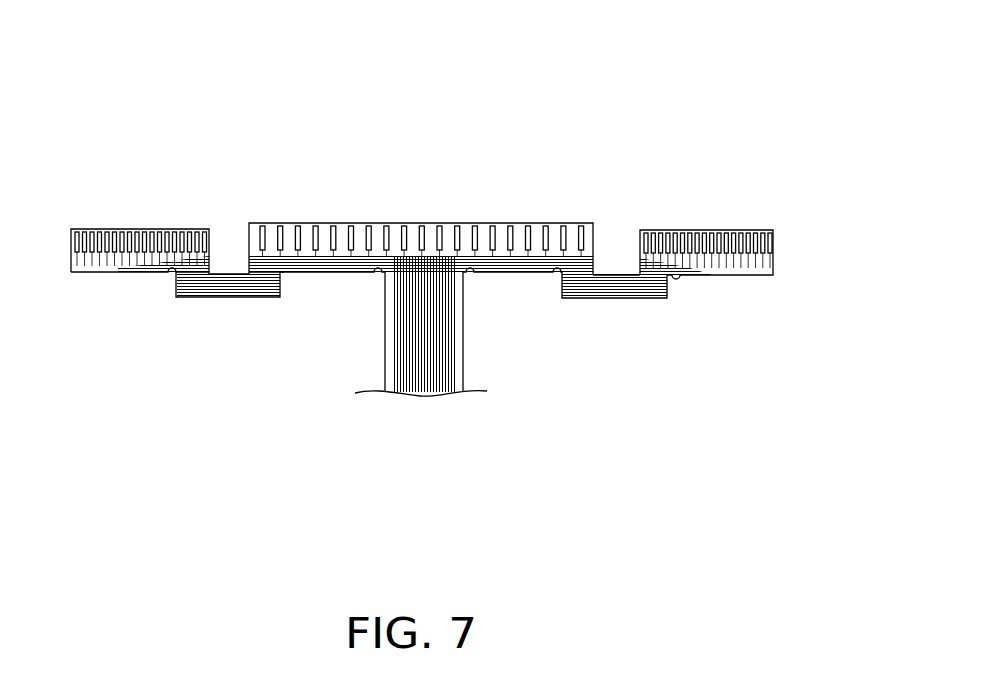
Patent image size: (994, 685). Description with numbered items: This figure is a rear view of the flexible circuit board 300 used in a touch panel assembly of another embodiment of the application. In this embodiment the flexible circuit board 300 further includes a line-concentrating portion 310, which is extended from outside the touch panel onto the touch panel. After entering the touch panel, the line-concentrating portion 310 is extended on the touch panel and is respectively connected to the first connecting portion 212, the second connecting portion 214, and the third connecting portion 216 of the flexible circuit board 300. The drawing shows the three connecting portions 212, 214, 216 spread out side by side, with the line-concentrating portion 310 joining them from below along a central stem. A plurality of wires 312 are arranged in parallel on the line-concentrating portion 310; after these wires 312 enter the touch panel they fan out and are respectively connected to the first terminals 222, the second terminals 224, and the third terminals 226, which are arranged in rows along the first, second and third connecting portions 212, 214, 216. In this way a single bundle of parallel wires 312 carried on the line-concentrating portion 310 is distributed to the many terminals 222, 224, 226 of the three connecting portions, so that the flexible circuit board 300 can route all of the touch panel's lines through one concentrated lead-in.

The flexible circuit board 300 is at (770, 101).
The first connecting portion 212 is at (724, 231).
The second connecting portion 214 is at (274, 223).
The third connecting portion 216 is at (88, 229).
The first terminals 222 is at (675, 231).
The second terminals 224 is at (335, 223).
The third terminals 226 is at (114, 230).
The line-concentrating portion 310 is at (385, 330).
The wires 312 is at (222, 301).